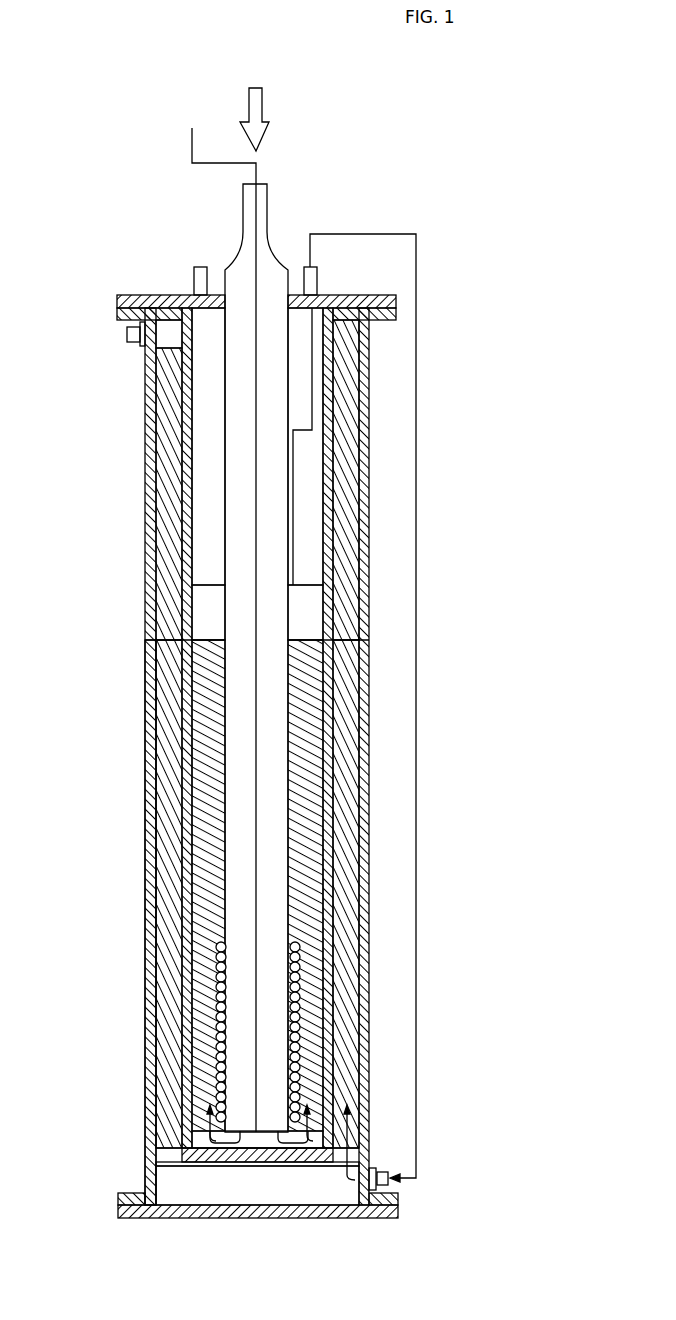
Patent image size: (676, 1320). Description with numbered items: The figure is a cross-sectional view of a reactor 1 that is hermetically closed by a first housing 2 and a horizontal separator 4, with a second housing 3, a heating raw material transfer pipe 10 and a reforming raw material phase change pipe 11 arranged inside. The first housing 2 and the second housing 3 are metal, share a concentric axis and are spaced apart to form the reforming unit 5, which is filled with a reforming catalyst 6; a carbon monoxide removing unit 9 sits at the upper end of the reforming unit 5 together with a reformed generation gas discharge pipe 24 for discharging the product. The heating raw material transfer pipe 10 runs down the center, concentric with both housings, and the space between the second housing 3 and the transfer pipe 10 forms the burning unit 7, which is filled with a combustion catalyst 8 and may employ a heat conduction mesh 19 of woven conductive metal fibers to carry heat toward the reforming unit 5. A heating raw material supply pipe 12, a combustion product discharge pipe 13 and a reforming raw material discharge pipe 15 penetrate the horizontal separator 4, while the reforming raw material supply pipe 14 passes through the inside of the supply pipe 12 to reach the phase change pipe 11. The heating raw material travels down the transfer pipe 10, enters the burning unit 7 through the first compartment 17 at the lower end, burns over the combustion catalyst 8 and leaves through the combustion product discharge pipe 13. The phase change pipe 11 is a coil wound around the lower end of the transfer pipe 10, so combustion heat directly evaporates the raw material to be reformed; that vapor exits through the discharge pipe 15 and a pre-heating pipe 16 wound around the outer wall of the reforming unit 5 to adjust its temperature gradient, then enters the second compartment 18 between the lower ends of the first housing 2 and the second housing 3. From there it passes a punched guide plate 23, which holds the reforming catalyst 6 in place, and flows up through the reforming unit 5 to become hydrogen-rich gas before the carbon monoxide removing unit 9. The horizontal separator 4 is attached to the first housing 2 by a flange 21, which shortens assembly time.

The reactor 1 is at (112, 228).
The first housing 2 is at (150, 757).
The second housing 3 is at (165, 795).
The horizontal separator 4 is at (117, 301).
The reforming unit 5 is at (150, 905).
The reforming catalyst 6 is at (165, 667).
The burning unit 7 is at (205, 607).
The combustion catalyst 8 is at (205, 708).
The carbon monoxide removing unit 9 is at (165, 372).
The heating raw material transfer pipe 10 is at (288, 378).
The reforming raw material phase change pipe 11 is at (303, 1009).
The heating raw material supply pipe 12 is at (268, 195).
The combustion product discharge pipe 13 is at (194, 282).
The reforming raw material supply pipe 14 is at (192, 142).
The reforming raw material discharge pipe 15 is at (317, 282).
The pre-heating pipe 16 is at (416, 625).
The first compartment 17 is at (320, 1138).
The second compartment 18 is at (295, 1190).
The heat conduction mesh 19 is at (205, 497).
The flange 21 is at (386, 301).
The punched guide plate 23 is at (158, 1172).
The reformed generation gas discharge pipe 24 is at (127, 334).